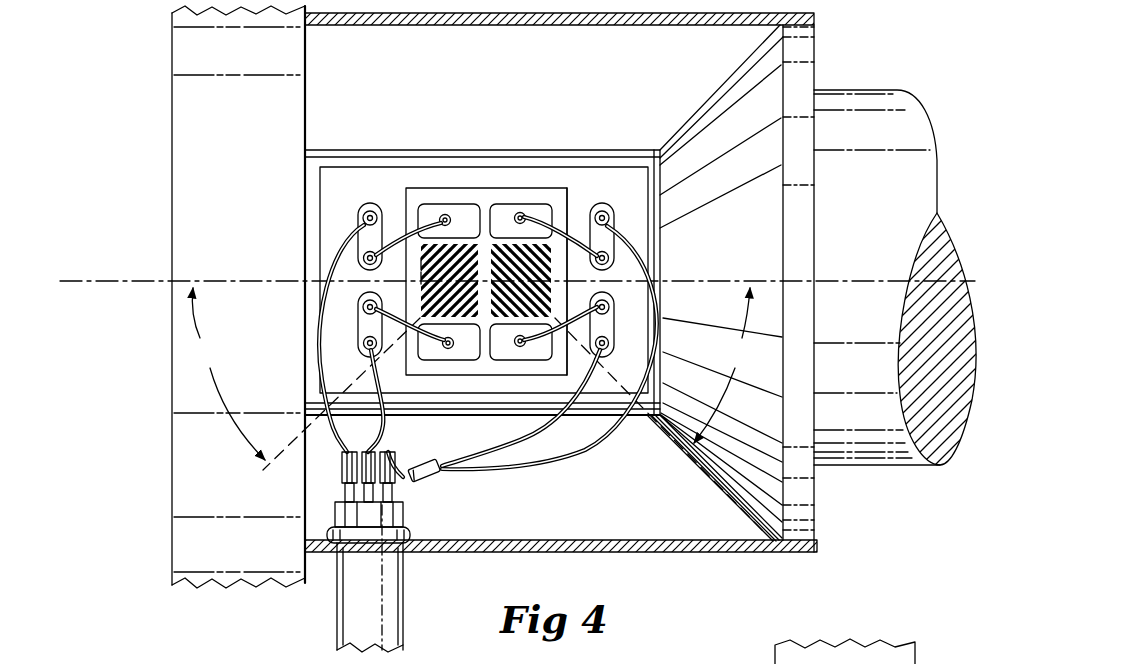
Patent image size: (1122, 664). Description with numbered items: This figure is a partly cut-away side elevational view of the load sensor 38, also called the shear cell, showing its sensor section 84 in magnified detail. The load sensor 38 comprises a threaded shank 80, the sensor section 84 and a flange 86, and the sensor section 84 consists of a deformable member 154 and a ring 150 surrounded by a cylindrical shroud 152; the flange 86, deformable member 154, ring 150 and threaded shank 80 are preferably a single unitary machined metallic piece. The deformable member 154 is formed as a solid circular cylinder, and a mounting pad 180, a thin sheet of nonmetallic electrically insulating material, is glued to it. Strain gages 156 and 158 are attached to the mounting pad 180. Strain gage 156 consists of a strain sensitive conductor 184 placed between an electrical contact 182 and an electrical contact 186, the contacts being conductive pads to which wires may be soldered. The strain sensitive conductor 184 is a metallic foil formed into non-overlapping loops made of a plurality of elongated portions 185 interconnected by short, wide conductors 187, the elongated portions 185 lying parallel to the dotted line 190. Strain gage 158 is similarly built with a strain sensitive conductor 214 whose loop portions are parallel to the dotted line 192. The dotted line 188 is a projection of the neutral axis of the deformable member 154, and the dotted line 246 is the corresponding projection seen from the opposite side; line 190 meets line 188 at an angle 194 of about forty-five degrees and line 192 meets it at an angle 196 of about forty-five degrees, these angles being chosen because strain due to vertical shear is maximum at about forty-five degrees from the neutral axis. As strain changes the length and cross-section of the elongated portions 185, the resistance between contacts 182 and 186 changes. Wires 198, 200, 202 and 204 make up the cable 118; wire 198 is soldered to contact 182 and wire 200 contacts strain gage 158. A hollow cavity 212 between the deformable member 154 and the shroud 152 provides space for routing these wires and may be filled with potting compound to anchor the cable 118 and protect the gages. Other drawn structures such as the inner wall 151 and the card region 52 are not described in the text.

The load sensor 38 is at (162, 63).
The flange 86 is at (172, 108).
The sensor section 84 is at (824, 42).
The horn top wall 151 is at (745, 62).
The cylindrical shroud 152 is at (668, 553).
The ring 150 is at (817, 497).
The threaded shank 80 is at (906, 470).
The dotted line 246 is at (913, 236).
The dotted line 188 is at (92, 281).
The deformable member 154 is at (358, 150).
The hollow cavity 212 is at (513, 79).
The sensor card 52 is at (505, 164).
The strain gage 156 is at (425, 204).
The electrical contact 182 is at (445, 214).
The strain gage 158 is at (530, 203).
The mounting pad 180 is at (577, 195).
The electrical contact 186 is at (440, 357).
The strain sensitive conductor 184 is at (414, 250).
The strain sensitive conductor 214 is at (552, 262).
The elongated portions 185 is at (425, 265).
The short, wide conductors 187 is at (425, 278).
The dotted line 190 is at (262, 468).
The dotted line 192 is at (745, 507).
The angle 194 is at (222, 374).
The angle 196 is at (725, 365).
The wire 204 is at (404, 480).
The wire 200 is at (437, 474).
The wire 198 is at (344, 466).
The wire 202 is at (363, 488).
The cable 118 is at (333, 628).